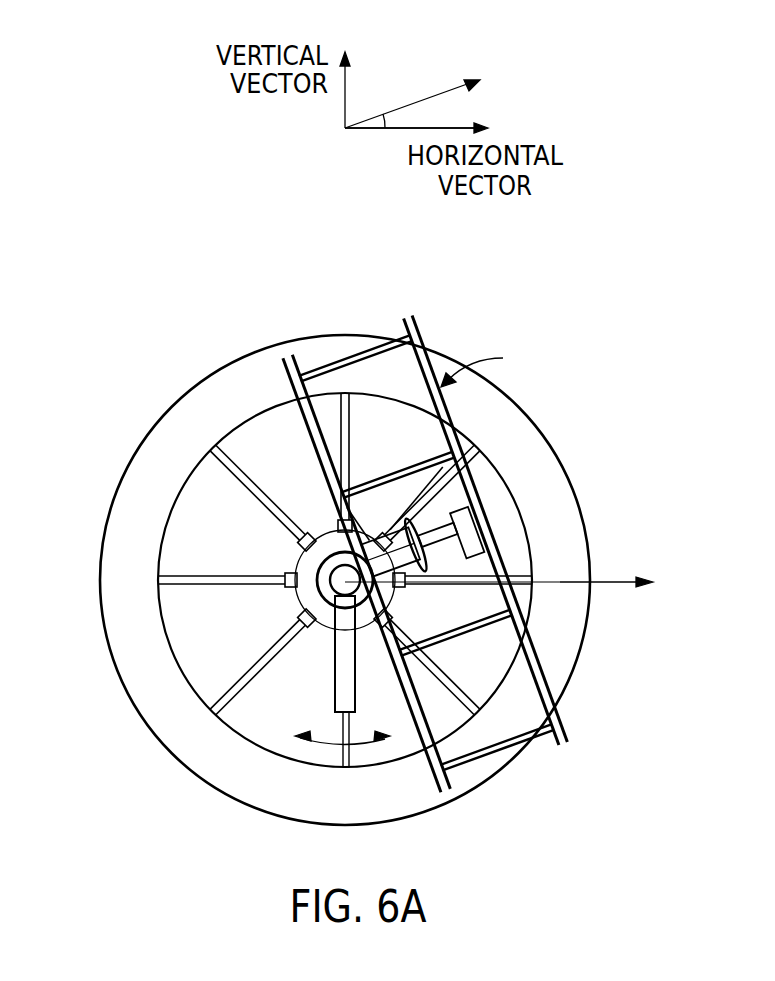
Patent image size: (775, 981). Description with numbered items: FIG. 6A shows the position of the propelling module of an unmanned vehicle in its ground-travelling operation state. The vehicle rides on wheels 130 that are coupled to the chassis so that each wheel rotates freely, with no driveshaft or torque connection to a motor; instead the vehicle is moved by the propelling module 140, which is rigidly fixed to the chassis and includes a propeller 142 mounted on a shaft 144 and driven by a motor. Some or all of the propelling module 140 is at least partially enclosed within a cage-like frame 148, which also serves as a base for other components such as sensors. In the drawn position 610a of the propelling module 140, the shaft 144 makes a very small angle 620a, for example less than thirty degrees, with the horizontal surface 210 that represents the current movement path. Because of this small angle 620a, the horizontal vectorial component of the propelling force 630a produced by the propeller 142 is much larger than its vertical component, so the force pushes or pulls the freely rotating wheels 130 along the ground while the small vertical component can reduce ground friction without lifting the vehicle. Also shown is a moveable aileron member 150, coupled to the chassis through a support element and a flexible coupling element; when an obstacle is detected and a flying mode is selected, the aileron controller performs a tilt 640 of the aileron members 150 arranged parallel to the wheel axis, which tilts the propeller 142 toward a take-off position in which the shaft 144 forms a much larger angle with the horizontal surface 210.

The wheel 130 is at (140, 677).
The propelling module 140 is at (426, 618).
The propeller 142 is at (408, 380).
The shaft 144 is at (480, 503).
The frame 148 is at (344, 366).
The aileron member 150 is at (333, 677).
The horizontal surface 210 is at (603, 584).
The position of propelling module 610a is at (503, 364).
The angle 620a is at (387, 120).
The propelling force 630a is at (432, 92).
The tilt 640 is at (330, 742).